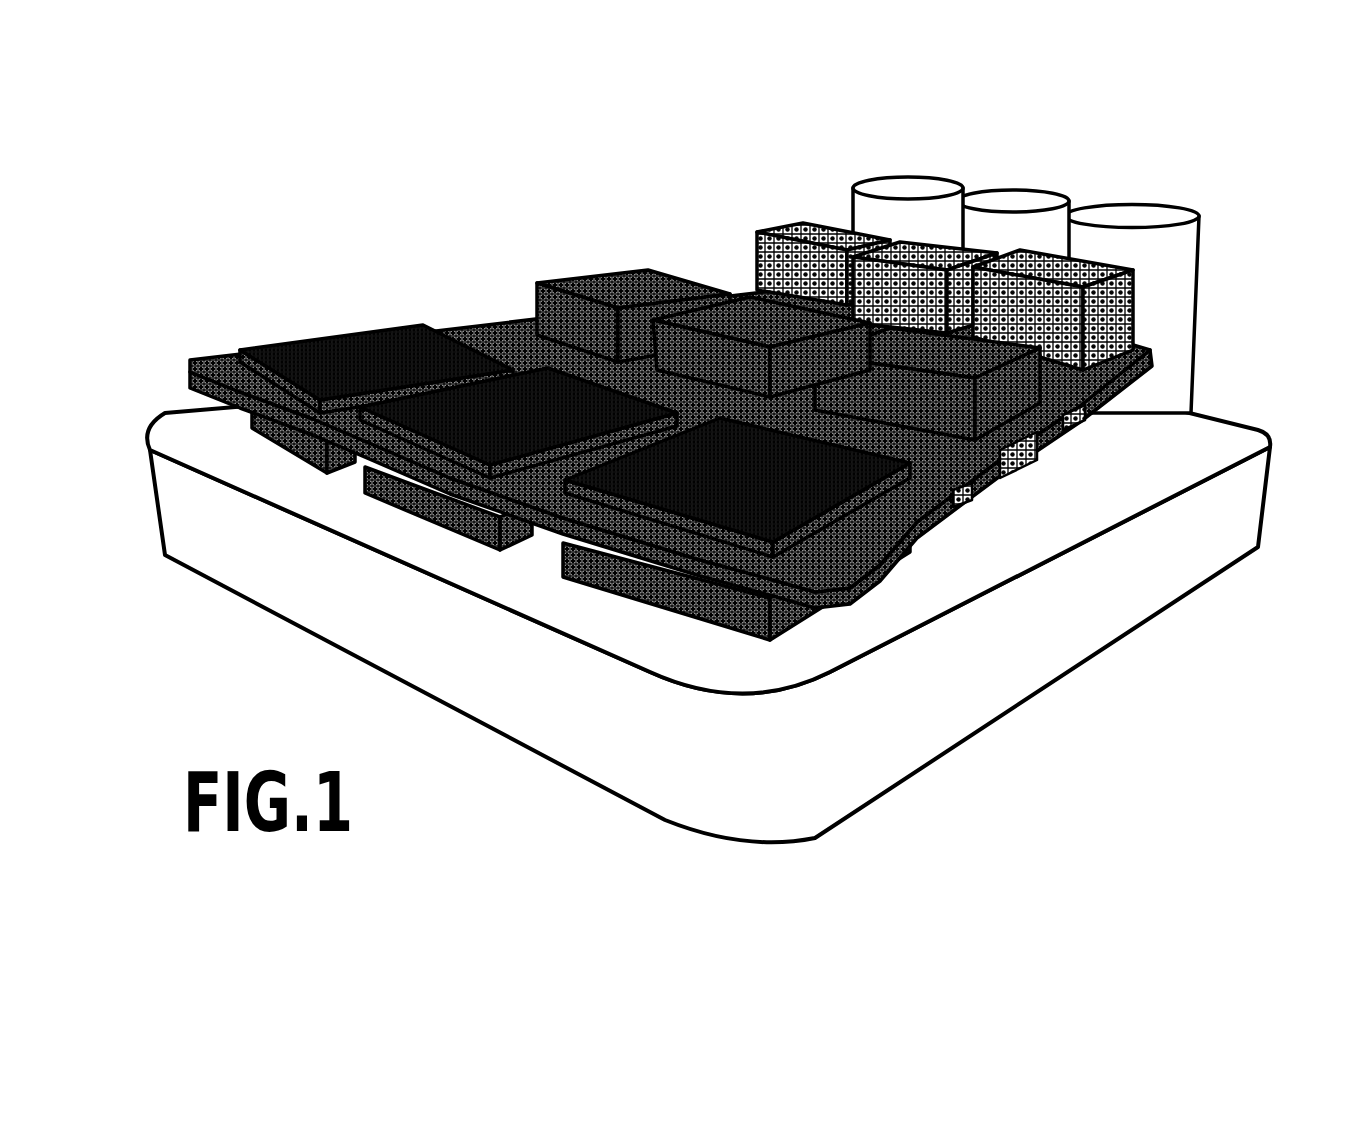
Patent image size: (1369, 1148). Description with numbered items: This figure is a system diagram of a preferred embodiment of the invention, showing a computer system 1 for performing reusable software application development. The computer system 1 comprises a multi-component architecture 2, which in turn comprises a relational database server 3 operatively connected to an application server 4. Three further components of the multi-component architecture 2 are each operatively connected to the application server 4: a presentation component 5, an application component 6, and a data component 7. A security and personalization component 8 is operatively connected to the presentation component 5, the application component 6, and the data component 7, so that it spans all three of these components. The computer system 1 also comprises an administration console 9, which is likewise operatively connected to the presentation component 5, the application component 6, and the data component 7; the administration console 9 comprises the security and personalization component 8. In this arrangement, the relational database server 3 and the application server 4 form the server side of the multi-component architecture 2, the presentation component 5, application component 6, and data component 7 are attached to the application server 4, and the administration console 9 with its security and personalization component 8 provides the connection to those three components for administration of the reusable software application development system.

The computer system 1 is at (706, 452).
The multi-component architecture 2 is at (684, 258).
The relational database server 3 is at (1183, 275).
The application server 4 is at (1233, 507).
The presentation component 5 is at (619, 357).
The application component 6 is at (747, 318).
The data component 7 is at (1041, 262).
The security and personalization component 8 is at (619, 362).
The administration console 9 is at (187, 370).